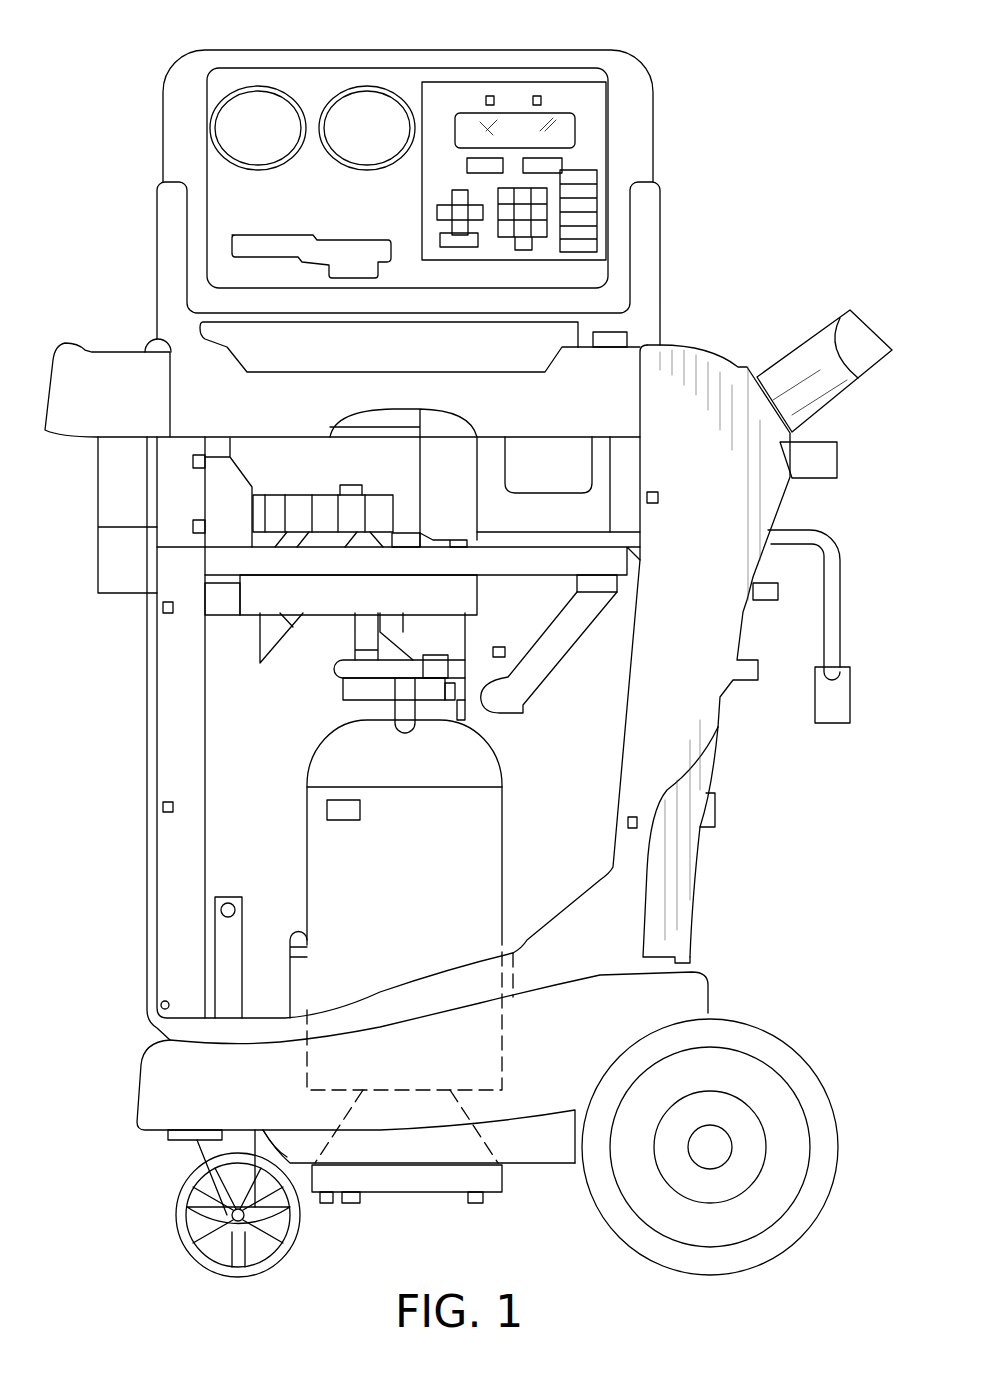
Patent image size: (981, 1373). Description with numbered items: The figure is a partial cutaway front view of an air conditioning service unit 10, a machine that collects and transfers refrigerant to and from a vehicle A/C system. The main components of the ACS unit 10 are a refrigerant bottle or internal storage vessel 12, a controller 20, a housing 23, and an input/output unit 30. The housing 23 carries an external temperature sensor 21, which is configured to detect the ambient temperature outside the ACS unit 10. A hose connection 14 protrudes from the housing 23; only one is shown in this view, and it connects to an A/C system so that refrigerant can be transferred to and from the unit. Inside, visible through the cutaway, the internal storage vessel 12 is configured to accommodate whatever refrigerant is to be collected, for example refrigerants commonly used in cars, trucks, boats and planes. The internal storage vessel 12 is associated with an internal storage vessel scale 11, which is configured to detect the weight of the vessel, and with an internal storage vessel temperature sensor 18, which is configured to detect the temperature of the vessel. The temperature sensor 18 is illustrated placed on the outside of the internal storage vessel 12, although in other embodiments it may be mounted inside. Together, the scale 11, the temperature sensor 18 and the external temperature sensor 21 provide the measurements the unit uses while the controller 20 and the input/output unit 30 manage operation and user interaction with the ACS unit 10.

The air conditioning service unit 10 is at (740, 137).
The internal storage vessel scale 11 is at (410, 1148).
The internal storage vessel 12 is at (306, 864).
The hose connection 14 is at (851, 697).
The internal storage vessel temperature sensor 18 is at (326, 808).
The controller 20 is at (206, 161).
The external temperature sensor 21 is at (716, 812).
The housing 23 is at (707, 343).
The input/output unit 30 is at (466, 82).